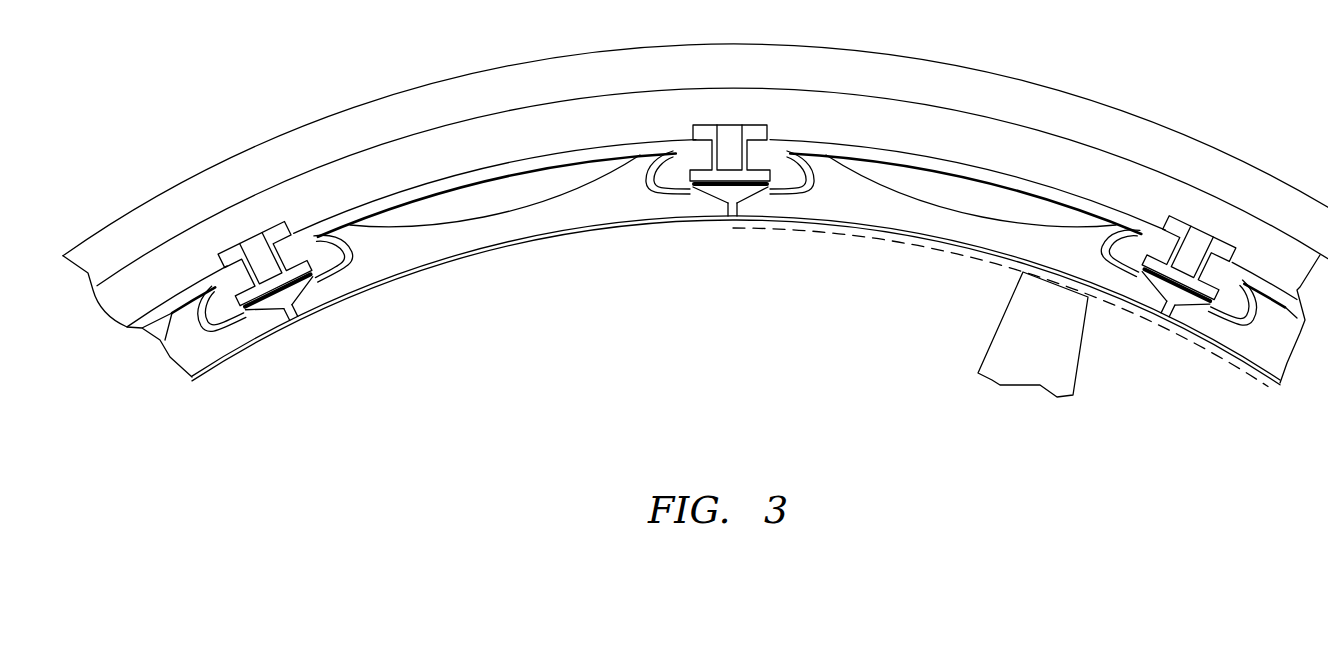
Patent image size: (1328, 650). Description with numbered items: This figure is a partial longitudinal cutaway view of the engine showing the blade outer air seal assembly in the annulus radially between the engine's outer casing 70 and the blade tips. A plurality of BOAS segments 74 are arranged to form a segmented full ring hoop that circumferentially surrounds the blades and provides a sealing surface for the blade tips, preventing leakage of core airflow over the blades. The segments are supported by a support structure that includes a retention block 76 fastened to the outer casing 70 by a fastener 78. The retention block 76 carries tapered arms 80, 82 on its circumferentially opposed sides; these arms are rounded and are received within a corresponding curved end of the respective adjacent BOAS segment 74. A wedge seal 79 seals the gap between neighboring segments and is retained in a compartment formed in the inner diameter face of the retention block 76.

The outer casing 70 is at (579, 150).
The BOAS segment 74 is at (500, 260).
The retention block 76 is at (786, 188).
The fastener 78 is at (730, 158).
The wedge seal 79 is at (732, 199).
The tapered arm 80 is at (667, 186).
The tapered arm 82 is at (802, 180).